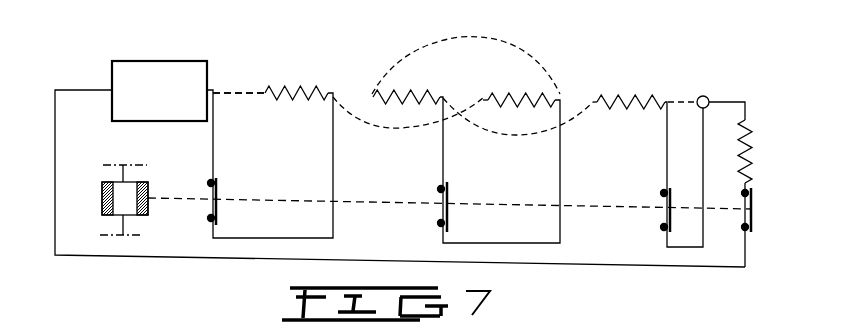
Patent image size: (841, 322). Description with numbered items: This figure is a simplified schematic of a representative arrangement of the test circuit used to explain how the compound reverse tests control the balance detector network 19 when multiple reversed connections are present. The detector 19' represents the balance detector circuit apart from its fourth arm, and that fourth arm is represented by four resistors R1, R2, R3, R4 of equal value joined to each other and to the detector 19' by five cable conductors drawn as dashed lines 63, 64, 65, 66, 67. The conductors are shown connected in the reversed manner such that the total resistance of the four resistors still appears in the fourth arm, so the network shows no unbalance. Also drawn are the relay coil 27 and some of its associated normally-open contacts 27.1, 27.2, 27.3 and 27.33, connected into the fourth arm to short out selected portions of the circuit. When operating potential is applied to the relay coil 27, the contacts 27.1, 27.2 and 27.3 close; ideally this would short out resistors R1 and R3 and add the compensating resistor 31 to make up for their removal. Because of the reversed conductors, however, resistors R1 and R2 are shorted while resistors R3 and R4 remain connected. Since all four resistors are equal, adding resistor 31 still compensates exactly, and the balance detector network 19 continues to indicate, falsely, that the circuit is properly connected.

The balance detector network 19 is at (430, 140).
The detector 19' is at (162, 67).
The conductor 63 is at (237, 93).
The conductor 64 is at (383, 128).
The conductor 65 is at (542, 133).
The conductor 66 is at (500, 40).
The conductor 67 is at (690, 95).
The resistor R1 is at (300, 90).
The resistor R2 is at (398, 92).
The resistor R3 is at (530, 95).
The resistor R4 is at (623, 95).
The resistor 31 is at (750, 150).
The relay coil 27 is at (146, 182).
The contact 27.1 is at (218, 195).
The contact 27.2 is at (449, 201).
The contact 27.3 is at (668, 207).
The contact 27.33 is at (753, 216).